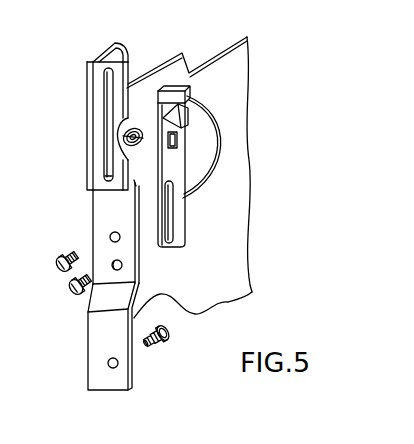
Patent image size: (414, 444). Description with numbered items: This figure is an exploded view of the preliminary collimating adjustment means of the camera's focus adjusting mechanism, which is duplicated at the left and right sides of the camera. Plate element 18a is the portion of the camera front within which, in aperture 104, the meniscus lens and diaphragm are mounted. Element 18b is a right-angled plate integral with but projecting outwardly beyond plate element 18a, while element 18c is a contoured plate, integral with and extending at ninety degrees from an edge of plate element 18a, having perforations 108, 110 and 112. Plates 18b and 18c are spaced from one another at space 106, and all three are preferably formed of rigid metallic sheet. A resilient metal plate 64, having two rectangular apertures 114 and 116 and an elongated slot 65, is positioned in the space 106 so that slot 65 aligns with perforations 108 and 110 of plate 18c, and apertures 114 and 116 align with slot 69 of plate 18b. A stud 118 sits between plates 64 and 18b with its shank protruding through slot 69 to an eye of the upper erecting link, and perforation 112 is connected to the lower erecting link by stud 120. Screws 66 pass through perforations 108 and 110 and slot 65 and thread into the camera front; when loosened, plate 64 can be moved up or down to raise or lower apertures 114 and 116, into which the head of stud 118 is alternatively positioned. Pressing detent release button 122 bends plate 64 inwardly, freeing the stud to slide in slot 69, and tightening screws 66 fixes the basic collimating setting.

The plate element 18a is at (247, 98).
The right-angled plate 18b is at (88, 102).
The contoured plate 18c is at (92, 342).
The resilient plate 64 is at (184, 89).
The elongated slot 65 is at (168, 230).
The screws 66 is at (66, 289).
The slot 69 is at (105, 82).
The aperture 104 is at (215, 183).
The space 106 is at (138, 182).
The perforation 108 is at (113, 232).
The perforation 110 is at (123, 265).
The perforation 112 is at (114, 358).
The rectangular aperture 114 is at (157, 101).
The rectangular aperture 116 is at (126, 157).
The stud 118 is at (147, 121).
The stud 120 is at (173, 334).
The detent release button 122 is at (175, 118).